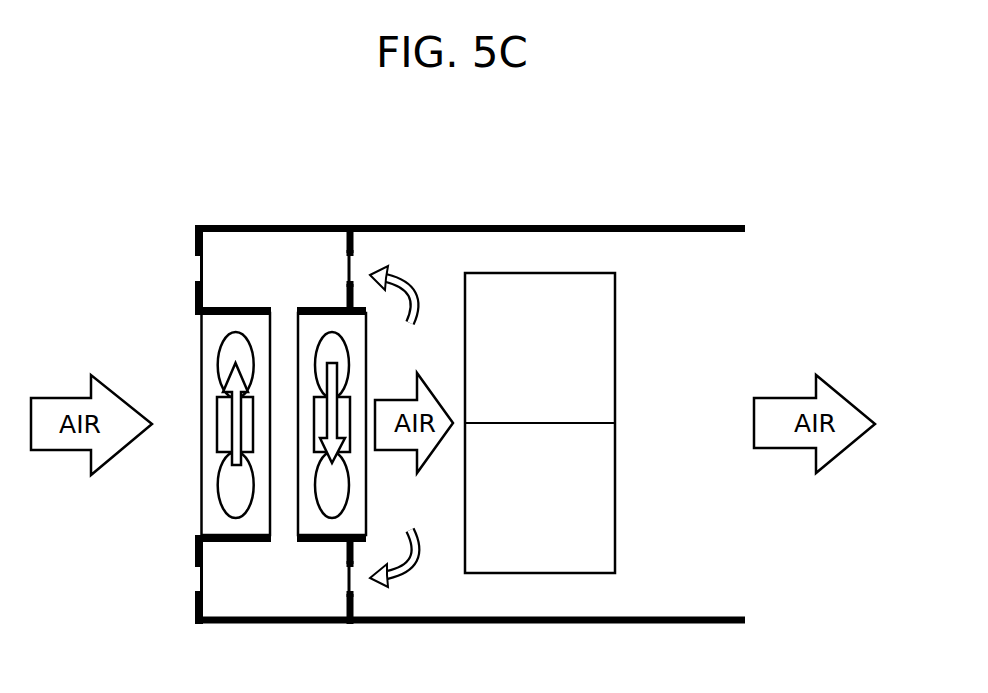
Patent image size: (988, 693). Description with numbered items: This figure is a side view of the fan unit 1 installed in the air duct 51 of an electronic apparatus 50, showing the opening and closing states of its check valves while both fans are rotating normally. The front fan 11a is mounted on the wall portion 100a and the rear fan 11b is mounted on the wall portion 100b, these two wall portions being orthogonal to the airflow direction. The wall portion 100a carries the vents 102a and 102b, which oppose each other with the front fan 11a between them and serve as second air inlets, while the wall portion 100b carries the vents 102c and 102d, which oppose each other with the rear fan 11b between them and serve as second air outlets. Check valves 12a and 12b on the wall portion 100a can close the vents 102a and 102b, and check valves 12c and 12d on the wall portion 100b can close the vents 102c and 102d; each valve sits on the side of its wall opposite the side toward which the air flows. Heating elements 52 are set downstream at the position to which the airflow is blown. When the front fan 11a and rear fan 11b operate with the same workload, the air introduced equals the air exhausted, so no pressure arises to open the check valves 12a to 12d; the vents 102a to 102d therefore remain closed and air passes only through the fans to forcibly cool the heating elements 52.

The fan unit 1 is at (279, 404).
The front fan 11a is at (190, 470).
The rear fan 11b is at (379, 470).
The check valve 12a is at (213, 258).
The check valve 12b is at (213, 588).
The check valve 12c is at (366, 258).
The check valve 12d is at (363, 588).
The wall portion 100a is at (172, 257).
The wall portion 100b is at (319, 256).
The vent 102a is at (189, 272).
The vent 102b is at (191, 581).
The vent 102c is at (342, 270).
The vent 102d is at (336, 595).
The electronic apparatus 50 is at (690, 195).
The air duct 51 is at (542, 261).
The heating elements 52 is at (600, 393).